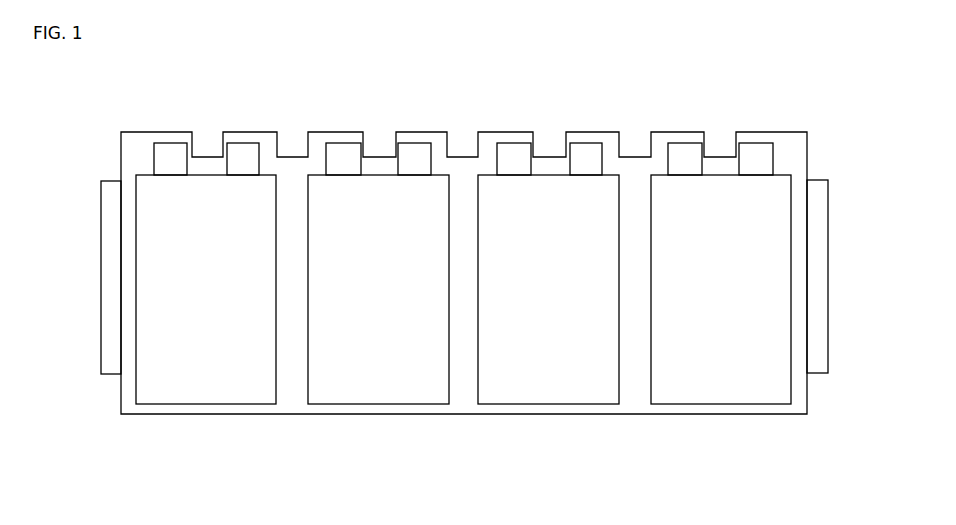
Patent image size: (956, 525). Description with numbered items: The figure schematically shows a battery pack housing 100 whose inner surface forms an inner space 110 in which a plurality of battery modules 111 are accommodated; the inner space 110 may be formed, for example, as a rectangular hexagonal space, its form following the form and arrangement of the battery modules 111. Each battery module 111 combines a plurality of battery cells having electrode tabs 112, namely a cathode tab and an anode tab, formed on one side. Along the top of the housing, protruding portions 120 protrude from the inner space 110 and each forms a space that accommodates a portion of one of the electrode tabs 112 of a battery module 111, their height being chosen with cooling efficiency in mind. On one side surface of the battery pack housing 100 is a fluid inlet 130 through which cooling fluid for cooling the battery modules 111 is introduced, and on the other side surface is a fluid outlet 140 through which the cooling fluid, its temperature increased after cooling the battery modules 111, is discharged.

The battery pack housing 100 is at (454, 286).
The inner space 110 is at (421, 295).
The battery module 111 is at (158, 268).
The electrode tab 112 is at (342, 157).
The protruding portion 120 is at (439, 143).
The fluid inlet 130 is at (110, 222).
The fluid outlet 140 is at (817, 205).